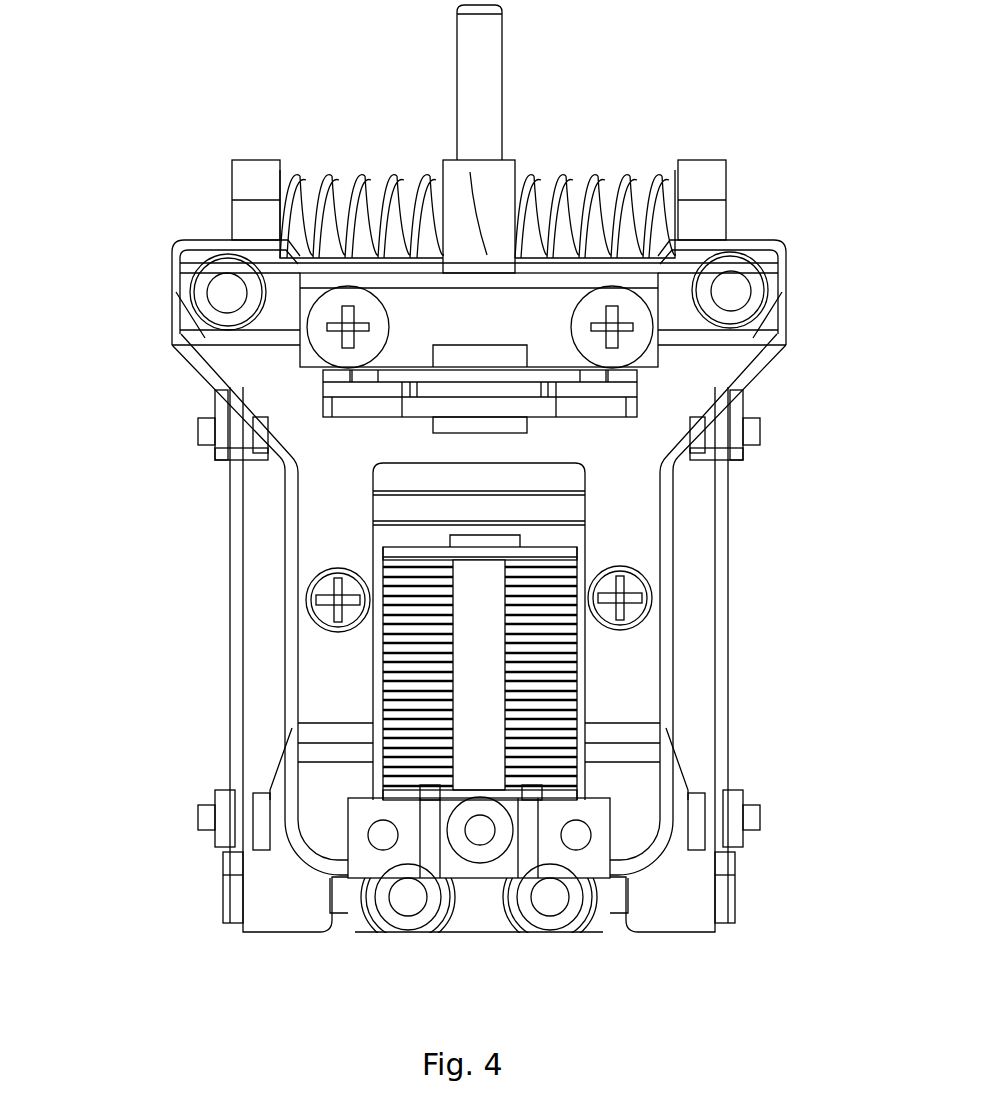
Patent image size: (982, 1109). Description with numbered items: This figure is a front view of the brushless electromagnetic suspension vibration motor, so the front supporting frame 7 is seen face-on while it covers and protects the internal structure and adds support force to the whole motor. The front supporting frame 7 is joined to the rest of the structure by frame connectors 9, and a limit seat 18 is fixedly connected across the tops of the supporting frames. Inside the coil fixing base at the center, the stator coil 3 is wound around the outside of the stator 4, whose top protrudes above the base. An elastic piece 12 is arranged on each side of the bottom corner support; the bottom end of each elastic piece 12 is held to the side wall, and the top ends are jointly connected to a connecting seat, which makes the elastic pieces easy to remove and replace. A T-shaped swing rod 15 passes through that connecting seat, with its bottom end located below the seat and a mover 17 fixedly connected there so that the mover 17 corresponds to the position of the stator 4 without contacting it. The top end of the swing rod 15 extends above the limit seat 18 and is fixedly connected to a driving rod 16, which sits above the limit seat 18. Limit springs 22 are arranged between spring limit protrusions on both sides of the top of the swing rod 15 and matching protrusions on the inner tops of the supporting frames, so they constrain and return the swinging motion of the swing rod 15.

The stator coil 3 is at (554, 648).
The stator 4 is at (521, 543).
The front supporting frame 7 is at (694, 377).
The frame connector 9 is at (478, 860).
The elastic piece 12 is at (751, 695).
The swing rod 15 is at (454, 372).
The driving rod 16 is at (458, 102).
The mover 17 is at (449, 509).
The limit seat 18 is at (439, 282).
The limit spring 22 is at (612, 167).